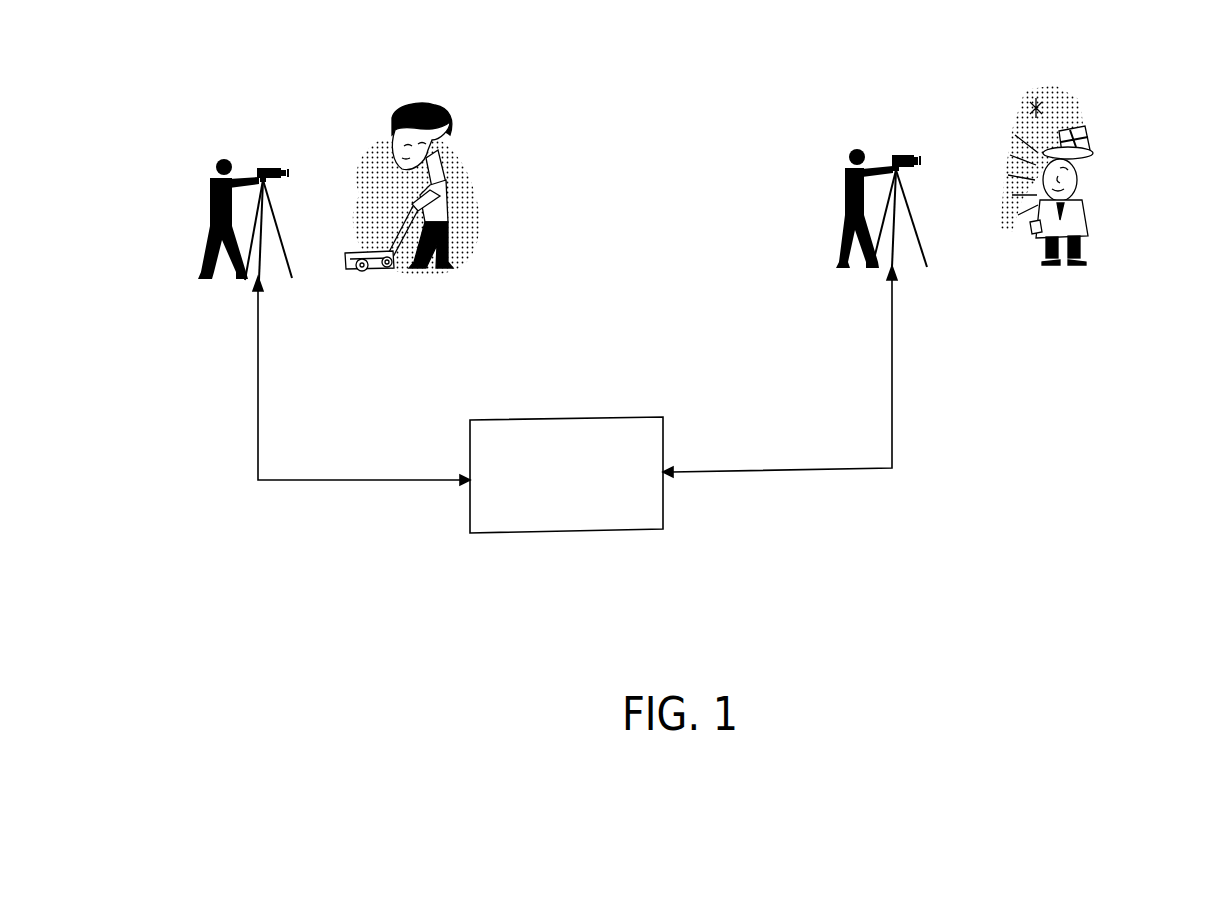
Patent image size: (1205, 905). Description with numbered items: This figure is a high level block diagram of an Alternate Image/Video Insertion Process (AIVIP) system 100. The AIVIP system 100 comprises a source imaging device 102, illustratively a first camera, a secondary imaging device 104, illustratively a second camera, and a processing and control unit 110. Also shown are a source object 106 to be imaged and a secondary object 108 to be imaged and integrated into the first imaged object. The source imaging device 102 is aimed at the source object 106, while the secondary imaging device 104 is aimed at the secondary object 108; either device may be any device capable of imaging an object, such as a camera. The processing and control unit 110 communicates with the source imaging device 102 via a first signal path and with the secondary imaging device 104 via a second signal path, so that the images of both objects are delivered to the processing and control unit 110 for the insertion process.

The AIVIP system 100 is at (1162, 583).
The source imaging device 102 is at (241, 174).
The secondary imaging device 104 is at (876, 163).
The source object 106 is at (425, 171).
The secondary object 108 is at (1070, 160).
The processing and control unit 110 is at (593, 504).